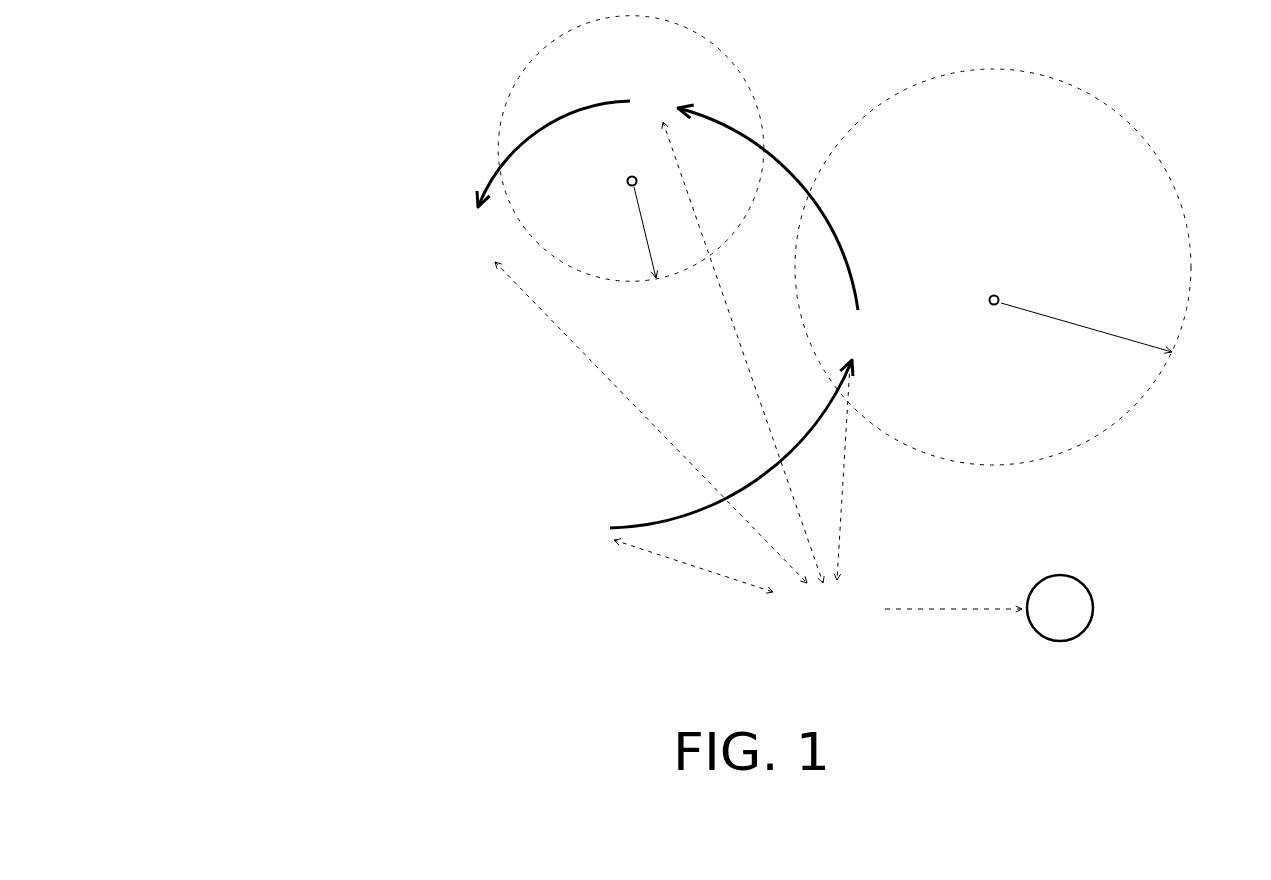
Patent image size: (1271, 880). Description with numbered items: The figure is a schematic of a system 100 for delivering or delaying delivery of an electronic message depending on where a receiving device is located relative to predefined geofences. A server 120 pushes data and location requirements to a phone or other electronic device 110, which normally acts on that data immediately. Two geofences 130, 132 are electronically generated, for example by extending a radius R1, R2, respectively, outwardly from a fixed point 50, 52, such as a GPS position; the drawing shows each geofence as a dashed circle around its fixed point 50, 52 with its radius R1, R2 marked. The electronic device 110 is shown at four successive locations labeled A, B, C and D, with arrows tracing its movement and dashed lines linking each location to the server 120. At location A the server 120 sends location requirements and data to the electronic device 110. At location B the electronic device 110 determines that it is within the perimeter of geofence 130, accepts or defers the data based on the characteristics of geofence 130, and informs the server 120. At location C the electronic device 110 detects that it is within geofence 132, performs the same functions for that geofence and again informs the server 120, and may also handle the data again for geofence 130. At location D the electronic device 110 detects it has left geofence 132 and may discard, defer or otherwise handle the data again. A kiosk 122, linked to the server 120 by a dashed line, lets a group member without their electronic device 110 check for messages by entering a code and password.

The system 100 is at (399, 605).
The electronic device 110 is at (434, 206).
The server 120 is at (890, 573).
The kiosk 122 is at (1092, 571).
The geofence 130 is at (993, 267).
The geofence 132 is at (631, 149).
The fixed point 50 is at (979, 323).
The fixed point 52 is at (617, 206).
The radius R1 is at (1073, 354).
The radius R2 is at (663, 212).